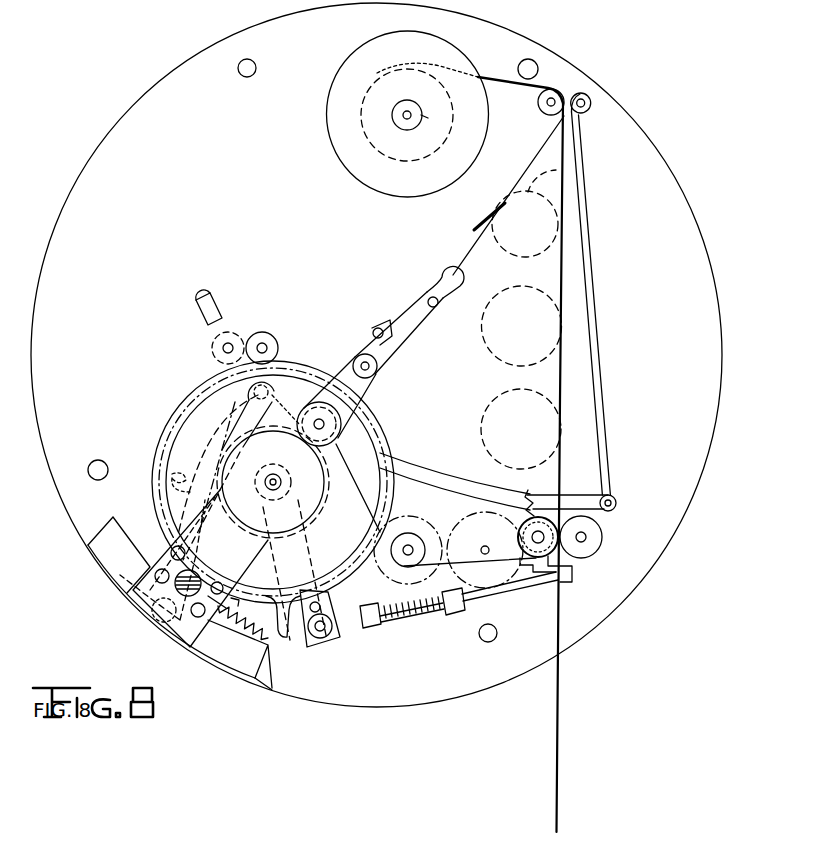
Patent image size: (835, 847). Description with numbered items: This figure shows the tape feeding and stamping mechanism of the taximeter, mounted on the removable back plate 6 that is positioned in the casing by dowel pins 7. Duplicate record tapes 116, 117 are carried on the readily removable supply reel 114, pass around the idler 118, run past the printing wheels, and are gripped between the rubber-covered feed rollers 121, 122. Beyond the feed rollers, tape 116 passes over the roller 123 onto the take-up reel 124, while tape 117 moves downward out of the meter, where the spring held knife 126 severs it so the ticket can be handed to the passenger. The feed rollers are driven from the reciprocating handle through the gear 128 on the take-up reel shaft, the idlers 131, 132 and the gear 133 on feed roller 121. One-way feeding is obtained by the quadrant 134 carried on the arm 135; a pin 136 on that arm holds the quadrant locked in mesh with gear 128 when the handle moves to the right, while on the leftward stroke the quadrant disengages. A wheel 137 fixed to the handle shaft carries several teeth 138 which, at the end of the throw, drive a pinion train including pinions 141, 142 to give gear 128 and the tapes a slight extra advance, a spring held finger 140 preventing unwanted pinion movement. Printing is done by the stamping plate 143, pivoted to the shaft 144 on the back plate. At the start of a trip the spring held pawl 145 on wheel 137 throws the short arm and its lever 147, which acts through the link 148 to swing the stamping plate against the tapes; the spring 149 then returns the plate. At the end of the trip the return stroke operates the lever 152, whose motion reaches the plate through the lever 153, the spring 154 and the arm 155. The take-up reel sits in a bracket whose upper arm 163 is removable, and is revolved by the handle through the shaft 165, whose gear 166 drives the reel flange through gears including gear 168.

The back plate 6 is at (376, 355).
The dowel pins 7 is at (256, 62).
The supply reel 114 is at (408, 114).
The record tape 116 is at (487, 58).
The record tape 117 is at (575, 683).
The idler 118 is at (546, 111).
The feed roller 121 is at (551, 522).
The feed roller 122 is at (602, 535).
The roller 123 is at (408, 547).
The take-up reel 124 is at (269, 517).
The spring held knife 126 is at (560, 583).
The gear 128 is at (372, 428).
The idler 131 is at (416, 522).
The idler 132 is at (485, 550).
The gear 133 is at (516, 492).
The quadrant 134 is at (292, 640).
The arm 135 is at (329, 598).
The pin 136 is at (323, 638).
The wheel 137 is at (305, 362).
The teeth 138 is at (244, 618).
The spring held finger 140 is at (205, 326).
The pinion 141 is at (231, 338).
The pinion 142 is at (268, 338).
The stamping plate 143 is at (604, 355).
The shaft 144 is at (586, 112).
The spring held pawl 145 is at (270, 640).
The lever 147 is at (238, 406).
The link 148 is at (434, 475).
The spring 149 is at (239, 654).
The lever 152 is at (368, 352).
The lever 153 is at (420, 320).
The spring 154 is at (479, 241).
The arm 155 is at (520, 172).
The upper arm 163 is at (194, 568).
The shaft 165 is at (280, 480).
The gear 166 is at (274, 467).
The gear 168 is at (327, 422).